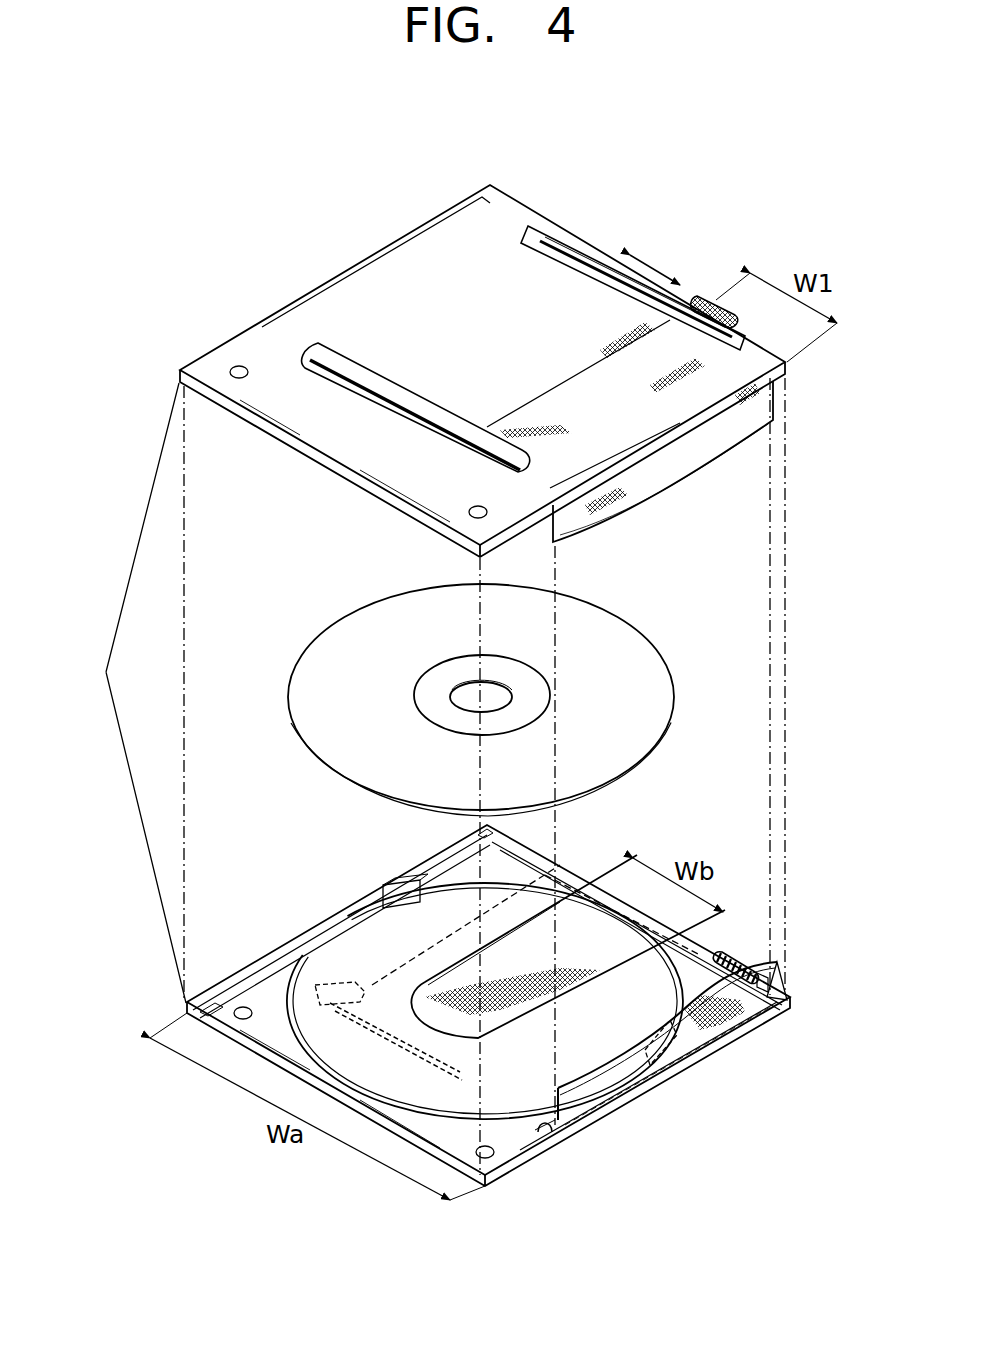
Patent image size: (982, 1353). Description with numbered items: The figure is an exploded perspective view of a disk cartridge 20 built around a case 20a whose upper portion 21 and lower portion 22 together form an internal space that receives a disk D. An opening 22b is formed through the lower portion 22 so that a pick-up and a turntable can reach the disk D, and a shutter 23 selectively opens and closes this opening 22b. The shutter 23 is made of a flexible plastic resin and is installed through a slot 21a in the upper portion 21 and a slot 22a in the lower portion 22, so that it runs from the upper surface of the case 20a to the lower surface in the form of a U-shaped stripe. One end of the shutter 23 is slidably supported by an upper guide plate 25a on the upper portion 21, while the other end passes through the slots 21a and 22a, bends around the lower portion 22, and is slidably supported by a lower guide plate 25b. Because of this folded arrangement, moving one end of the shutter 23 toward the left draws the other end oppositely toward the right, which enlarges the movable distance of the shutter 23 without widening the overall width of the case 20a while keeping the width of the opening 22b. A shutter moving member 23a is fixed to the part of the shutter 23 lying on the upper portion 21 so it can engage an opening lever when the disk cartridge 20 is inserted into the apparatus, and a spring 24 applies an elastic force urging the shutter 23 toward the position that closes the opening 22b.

The disk cartridge 20 is at (132, 298).
The case 20a is at (416, 776).
The upper portion 21 is at (238, 346).
The slot 21a is at (548, 483).
The lower portion 22 is at (640, 1090).
The slot 22a is at (543, 1133).
The opening 22b is at (457, 977).
The shutter 23 is at (673, 460).
The shutter moving member 23a is at (702, 297).
The spring 24 is at (745, 965).
The upper guide plate 25a is at (530, 240).
The lower guide plate 25b is at (288, 1007).
The disk D is at (335, 655).